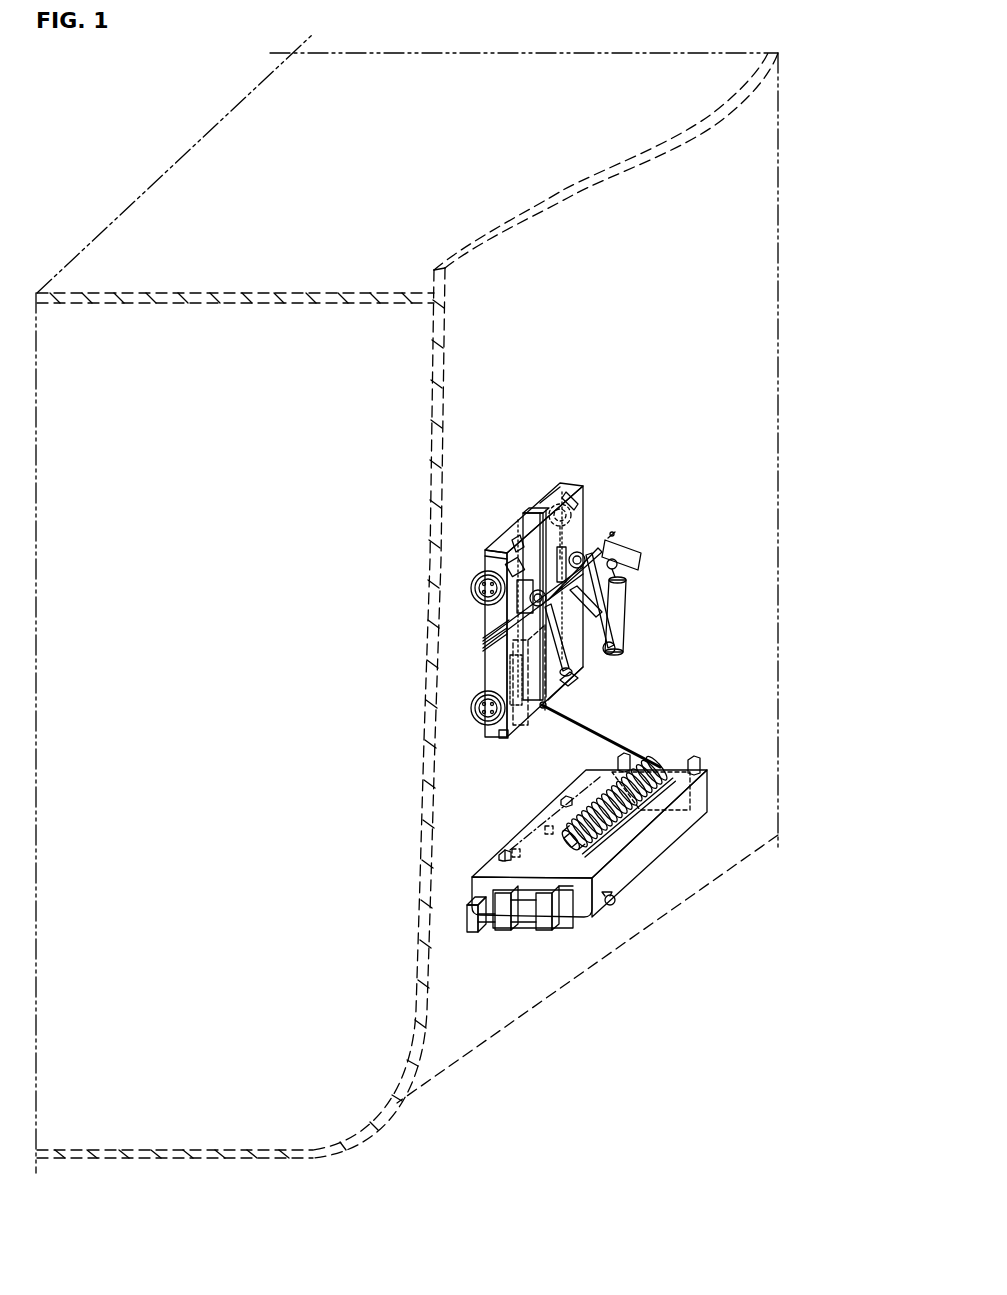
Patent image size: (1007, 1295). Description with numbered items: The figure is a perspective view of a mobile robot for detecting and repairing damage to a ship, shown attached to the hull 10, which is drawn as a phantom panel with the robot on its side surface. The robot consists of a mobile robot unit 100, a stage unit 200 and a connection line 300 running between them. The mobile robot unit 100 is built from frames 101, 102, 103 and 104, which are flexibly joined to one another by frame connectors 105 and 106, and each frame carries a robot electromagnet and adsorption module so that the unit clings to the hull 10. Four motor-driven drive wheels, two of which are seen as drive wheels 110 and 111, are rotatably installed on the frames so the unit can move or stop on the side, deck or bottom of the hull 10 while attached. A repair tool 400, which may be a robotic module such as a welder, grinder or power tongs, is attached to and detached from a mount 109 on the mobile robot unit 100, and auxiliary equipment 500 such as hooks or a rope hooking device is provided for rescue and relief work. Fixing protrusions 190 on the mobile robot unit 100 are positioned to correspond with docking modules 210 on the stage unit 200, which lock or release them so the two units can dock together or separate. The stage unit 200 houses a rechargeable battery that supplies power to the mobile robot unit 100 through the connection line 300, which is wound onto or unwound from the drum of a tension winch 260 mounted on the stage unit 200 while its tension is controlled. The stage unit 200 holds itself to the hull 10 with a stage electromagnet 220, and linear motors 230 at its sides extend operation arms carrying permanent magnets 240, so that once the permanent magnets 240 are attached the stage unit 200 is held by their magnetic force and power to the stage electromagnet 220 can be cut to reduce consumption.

The hull 10 is at (778, 88).
The mobile robot unit 100 is at (524, 611).
The frame 101 is at (505, 552).
The frame 102 is at (548, 490).
The frame 103 is at (522, 740).
The frame 104 is at (563, 688).
The frame connector 105 is at (525, 510).
The frame connector 106 is at (483, 645).
The mount 109 is at (510, 552).
The drive wheel 110 is at (471, 592).
The drive wheel 111 is at (471, 712).
The fixing protrusion 190 is at (503, 740).
The stage unit 200 is at (593, 900).
The docking module 210 is at (500, 855).
The stage electromagnet 220 is at (477, 878).
The linear motor 230 is at (528, 923).
The permanent magnet 240 is at (468, 933).
The tension winch 260 is at (644, 822).
The connection line 300 is at (594, 724).
The repair tool 400 is at (646, 553).
The auxiliary equipment 500 is at (505, 675).